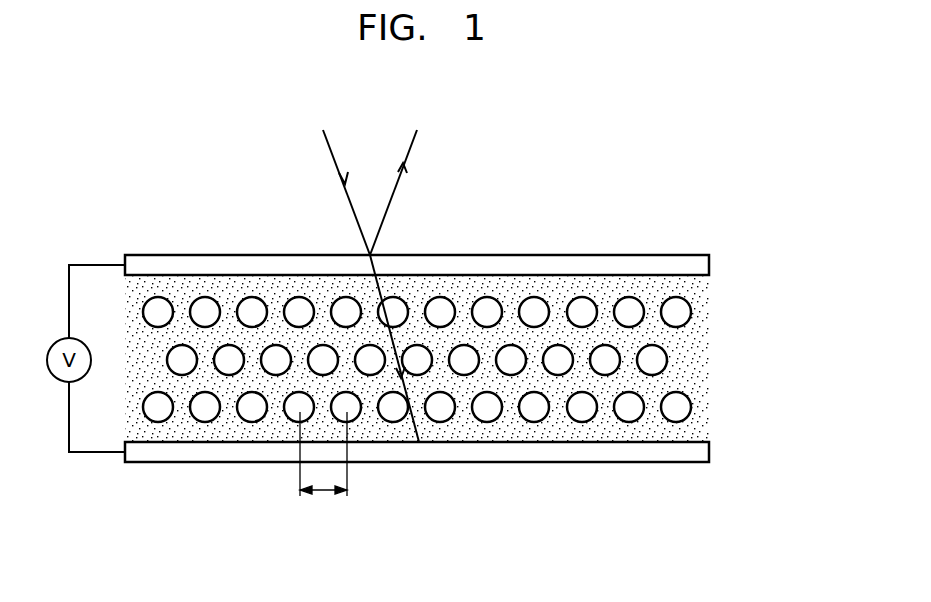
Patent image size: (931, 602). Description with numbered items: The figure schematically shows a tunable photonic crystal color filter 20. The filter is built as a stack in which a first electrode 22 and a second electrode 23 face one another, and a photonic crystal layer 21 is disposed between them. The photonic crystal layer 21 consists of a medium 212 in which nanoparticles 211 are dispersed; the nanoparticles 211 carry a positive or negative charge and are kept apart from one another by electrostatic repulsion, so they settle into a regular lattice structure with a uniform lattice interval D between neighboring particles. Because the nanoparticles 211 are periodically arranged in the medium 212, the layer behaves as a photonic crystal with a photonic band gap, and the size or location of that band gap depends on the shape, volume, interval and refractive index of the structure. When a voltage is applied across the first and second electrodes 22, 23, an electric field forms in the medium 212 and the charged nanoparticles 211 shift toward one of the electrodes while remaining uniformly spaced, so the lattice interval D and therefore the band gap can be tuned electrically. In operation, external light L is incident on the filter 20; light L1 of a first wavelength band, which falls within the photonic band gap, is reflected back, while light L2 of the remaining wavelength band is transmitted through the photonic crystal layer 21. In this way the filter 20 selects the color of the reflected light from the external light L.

The tunable photonic crystal color filter 20 is at (480, 324).
The photonic crystal layer 21 is at (480, 358).
The nanoparticles 211 is at (691, 313).
The medium 212 is at (697, 358).
The first electrode 22 is at (709, 452).
The second electrode 23 is at (709, 265).
The external light L is at (341, 192).
The light of a first wavelength band L1 is at (402, 192).
The light of the remaining wavelength band L2 is at (400, 348).
The lattice interval D is at (323, 467).